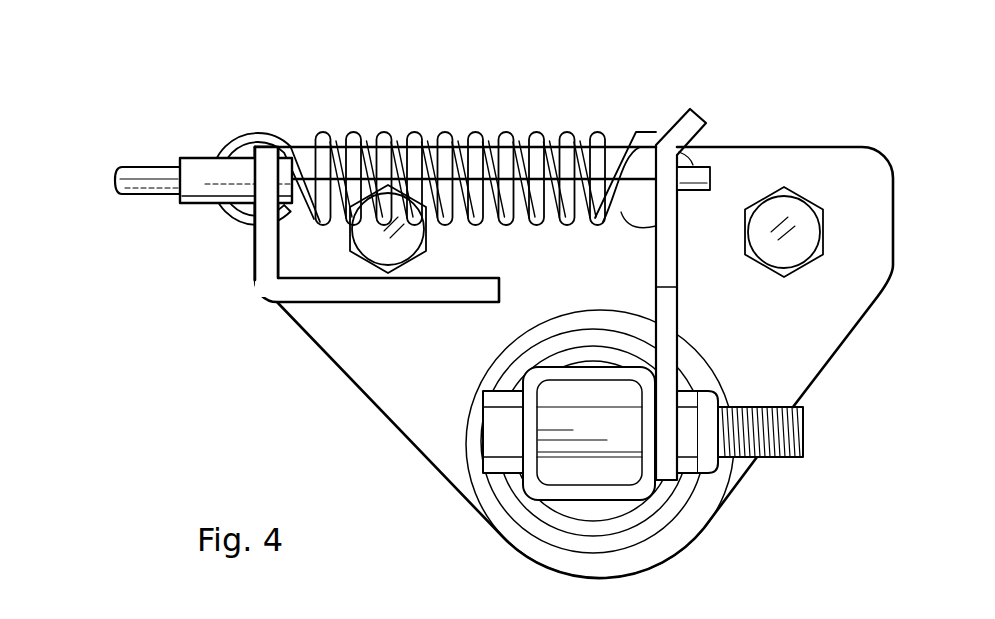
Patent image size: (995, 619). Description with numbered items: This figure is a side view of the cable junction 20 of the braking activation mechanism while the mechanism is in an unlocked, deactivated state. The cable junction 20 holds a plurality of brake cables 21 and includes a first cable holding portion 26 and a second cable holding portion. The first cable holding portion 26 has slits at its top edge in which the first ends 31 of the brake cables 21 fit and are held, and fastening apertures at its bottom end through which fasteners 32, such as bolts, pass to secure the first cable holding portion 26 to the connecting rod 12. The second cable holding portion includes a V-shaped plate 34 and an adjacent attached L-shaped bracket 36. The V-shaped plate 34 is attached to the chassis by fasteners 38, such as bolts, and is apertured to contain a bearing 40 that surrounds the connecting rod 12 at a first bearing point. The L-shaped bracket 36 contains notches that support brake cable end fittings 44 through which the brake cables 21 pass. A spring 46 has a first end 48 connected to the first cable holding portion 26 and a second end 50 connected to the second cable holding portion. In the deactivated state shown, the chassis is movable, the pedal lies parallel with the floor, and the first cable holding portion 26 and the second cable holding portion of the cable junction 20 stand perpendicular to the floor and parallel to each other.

The connecting rod 12 is at (562, 490).
The cable junction 20 is at (803, 50).
The brake cables 21 is at (497, 138).
The first cable holding portion 26 is at (670, 237).
The first ends of the brake cables 31 is at (700, 170).
The fasteners 32 is at (800, 437).
The V-shaped plate 34 is at (390, 377).
The L-shaped bracket 36 is at (358, 293).
The fasteners 38 is at (787, 222).
The bearing 40 is at (560, 353).
The brake cable end fittings 44 is at (198, 165).
The spring 46 is at (382, 136).
The first end of the spring 48 is at (713, 147).
The second end of the spring 50 is at (237, 210).